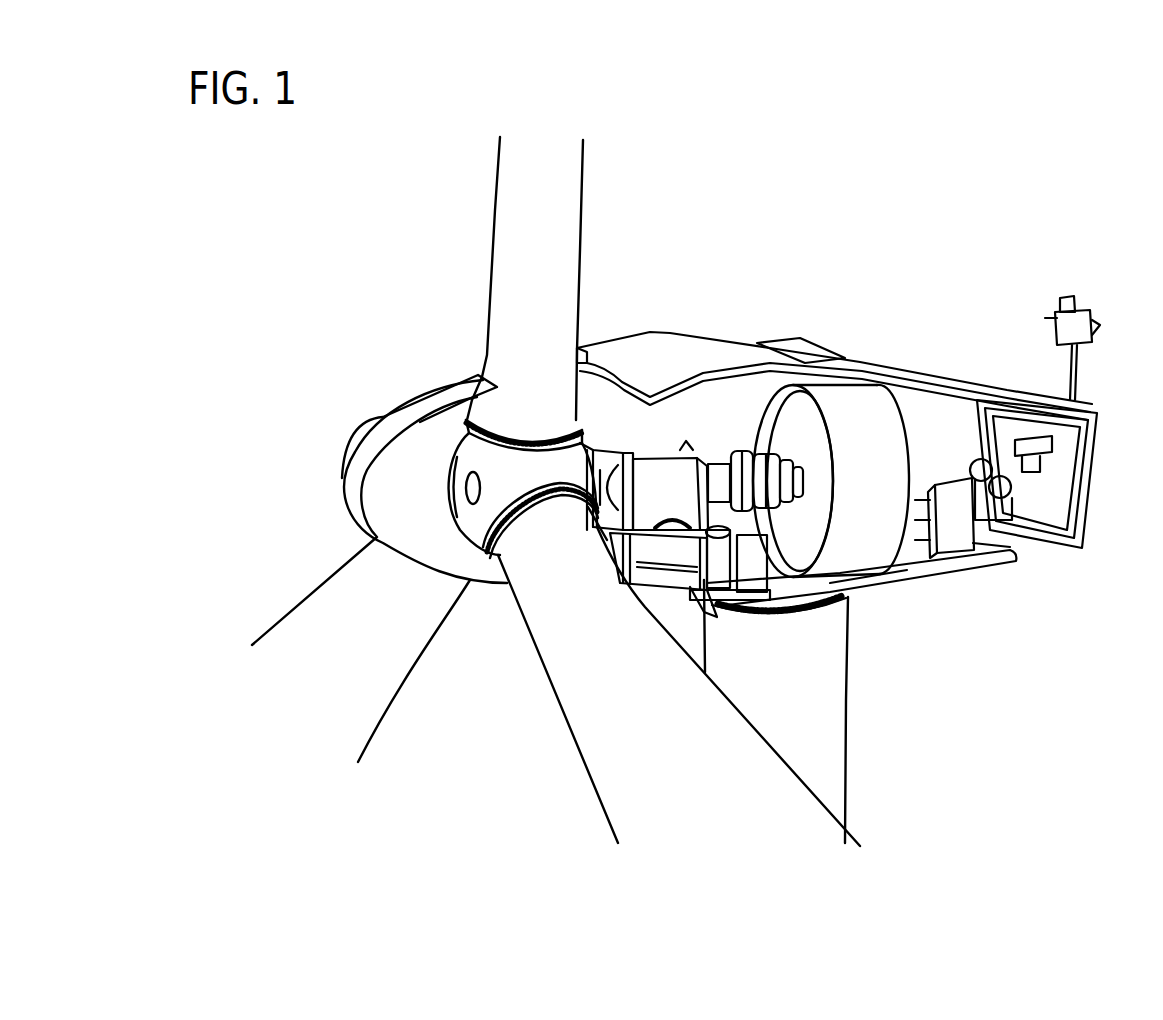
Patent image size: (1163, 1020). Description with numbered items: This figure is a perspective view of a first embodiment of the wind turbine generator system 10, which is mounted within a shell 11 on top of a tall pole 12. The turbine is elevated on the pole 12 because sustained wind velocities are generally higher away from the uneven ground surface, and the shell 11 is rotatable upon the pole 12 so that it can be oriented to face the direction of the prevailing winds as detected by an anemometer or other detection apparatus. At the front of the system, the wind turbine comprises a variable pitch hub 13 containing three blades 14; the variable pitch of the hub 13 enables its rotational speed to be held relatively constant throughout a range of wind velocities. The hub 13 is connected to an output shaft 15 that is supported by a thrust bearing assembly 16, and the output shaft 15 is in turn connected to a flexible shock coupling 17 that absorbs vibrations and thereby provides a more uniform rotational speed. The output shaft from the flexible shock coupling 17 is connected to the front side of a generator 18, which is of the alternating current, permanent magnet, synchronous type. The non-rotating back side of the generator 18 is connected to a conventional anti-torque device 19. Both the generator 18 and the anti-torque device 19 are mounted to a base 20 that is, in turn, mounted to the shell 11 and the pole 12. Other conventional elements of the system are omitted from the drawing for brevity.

The wind turbine generator system 10 is at (368, 284).
The shell 11 is at (1043, 560).
The pole 12 is at (847, 763).
The variable pitch hub 13 is at (493, 478).
The blade 14 is at (599, 795).
The output shaft 15 is at (715, 463).
The thrust bearing assembly 16 is at (657, 457).
The flexible shock coupling 17 is at (770, 447).
The generator 18 is at (867, 450).
The anti-torque device 19 is at (947, 470).
The base 20 is at (905, 580).